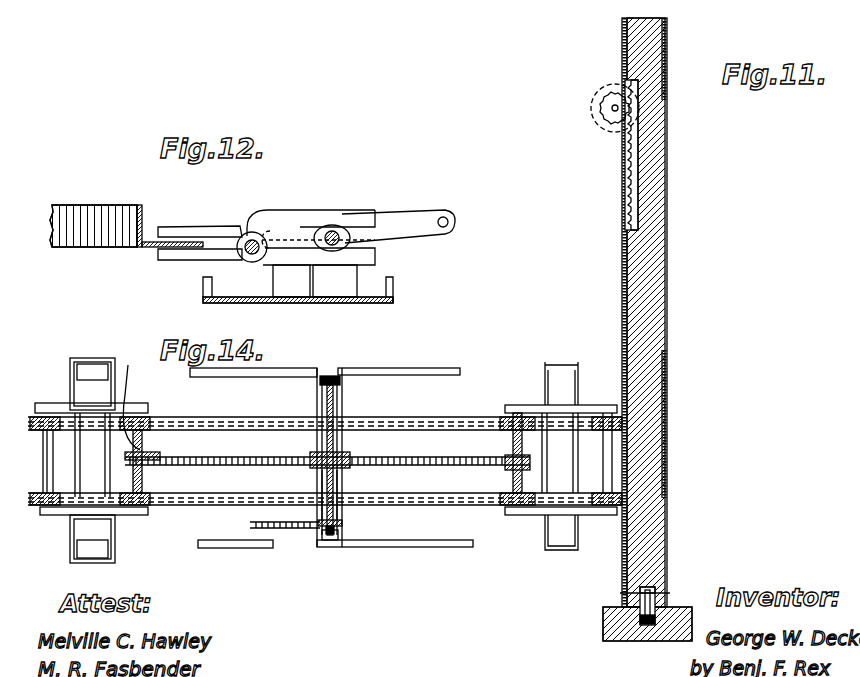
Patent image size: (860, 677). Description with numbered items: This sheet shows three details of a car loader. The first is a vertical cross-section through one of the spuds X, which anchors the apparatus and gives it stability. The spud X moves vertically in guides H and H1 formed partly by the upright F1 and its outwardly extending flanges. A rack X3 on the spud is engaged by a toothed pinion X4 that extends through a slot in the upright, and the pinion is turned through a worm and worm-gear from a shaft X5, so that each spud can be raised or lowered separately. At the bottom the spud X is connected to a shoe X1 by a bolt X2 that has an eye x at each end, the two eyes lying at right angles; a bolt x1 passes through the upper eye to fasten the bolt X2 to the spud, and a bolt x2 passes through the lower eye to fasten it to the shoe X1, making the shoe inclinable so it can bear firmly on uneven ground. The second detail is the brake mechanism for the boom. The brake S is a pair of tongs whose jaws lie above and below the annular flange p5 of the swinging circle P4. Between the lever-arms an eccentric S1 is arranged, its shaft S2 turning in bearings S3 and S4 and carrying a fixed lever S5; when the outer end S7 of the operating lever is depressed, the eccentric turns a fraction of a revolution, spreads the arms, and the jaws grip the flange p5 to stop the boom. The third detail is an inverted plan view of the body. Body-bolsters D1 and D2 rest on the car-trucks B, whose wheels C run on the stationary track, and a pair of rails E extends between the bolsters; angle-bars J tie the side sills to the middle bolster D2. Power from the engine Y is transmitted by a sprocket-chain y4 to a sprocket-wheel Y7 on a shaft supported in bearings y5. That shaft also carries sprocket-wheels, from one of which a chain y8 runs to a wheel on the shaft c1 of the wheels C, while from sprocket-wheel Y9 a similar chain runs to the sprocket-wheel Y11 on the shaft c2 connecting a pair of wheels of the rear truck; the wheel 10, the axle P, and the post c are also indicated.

In FIG. 11, the spud X is at (667, 514).
In FIG. 11, the upright F1 is at (622, 37).
In FIG. 11, the guide H1 is at (667, 52).
In FIG. 11, the guide H is at (667, 406).
In FIG. 14, the guide H is at (92, 358).
In FIG. 11, the rack X3 is at (630, 176).
In FIG. 11, the toothed pinion X4 is at (602, 126).
In FIG. 11, the shaft X5 is at (591, 106).
In FIG. 11, the shoe X1 is at (603, 624).
In FIG. 11, the bolt X2 is at (655, 597).
In FIG. 11, the bolt x1 is at (634, 592).
In FIG. 11, the bolt x2 is at (640, 620).
In FIG. 11, the eye x is at (650, 628).
In FIG. 12, the swinging circle P4 is at (140, 212).
In FIG. 12, the annular flange p5 is at (150, 250).
In FIG. 12, the brake S is at (195, 233).
In FIG. 12, the eccentric S1 is at (322, 215).
In FIG. 12, the bearing S3 is at (314, 238).
In FIG. 12, the fixed lever S5 is at (398, 209).
In FIG. 12, the bearing S4 is at (360, 238).
In FIG. 12, the outer end of lever S7 is at (298, 284).
In FIG. 12, the lever S2 is at (332, 256).
In FIG. 14, the car-truck B is at (125, 410).
In FIG. 14, the wheel C is at (38, 417).
In FIG. 14, the axle P is at (88, 487).
In FIG. 14, the shaft c1 is at (160, 442).
In FIG. 14, the post c is at (608, 453).
In FIG. 14, the engine Y is at (135, 391).
In FIG. 14, the lever arm 10 is at (132, 366).
In FIG. 14, the sprocket-chain y8 is at (322, 450).
In FIG. 14, the rail E is at (252, 432).
In FIG. 14, the angle-bar J is at (240, 377).
In FIG. 14, the bolster D2 is at (342, 445).
In FIG. 14, the sprocket-wheel Y9 is at (345, 466).
In FIG. 14, the sprocket-wheel Y7 is at (368, 522).
In FIG. 14, the sprocket-chain y4 is at (282, 530).
In FIG. 14, the bearing y5 is at (330, 535).
In FIG. 14, the body-bolster D1 is at (542, 393).
In FIG. 14, the shaft c2 is at (512, 440).
In FIG. 14, the sprocket-wheel Y11 is at (488, 468).